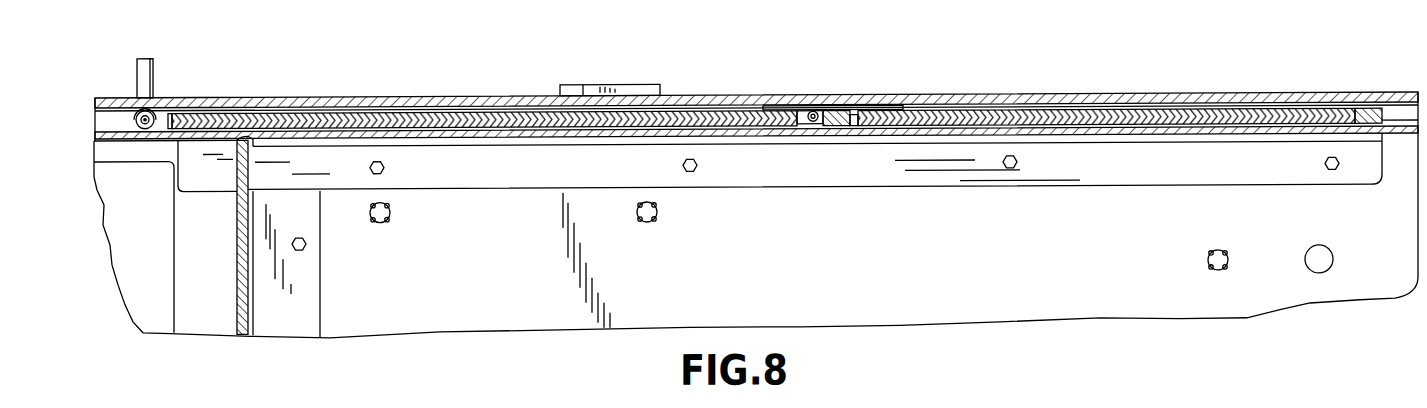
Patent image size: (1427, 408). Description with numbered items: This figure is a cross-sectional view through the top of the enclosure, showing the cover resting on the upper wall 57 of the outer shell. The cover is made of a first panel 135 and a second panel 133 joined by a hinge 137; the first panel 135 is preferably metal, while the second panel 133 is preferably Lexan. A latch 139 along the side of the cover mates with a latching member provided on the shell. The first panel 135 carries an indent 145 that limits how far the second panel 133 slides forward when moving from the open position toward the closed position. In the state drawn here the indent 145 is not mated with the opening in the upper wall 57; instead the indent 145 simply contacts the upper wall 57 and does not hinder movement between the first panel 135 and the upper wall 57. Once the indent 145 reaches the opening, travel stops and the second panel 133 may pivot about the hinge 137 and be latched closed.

The upper wall 57 is at (747, 136).
The second panel 133 is at (400, 126).
The first panel 135 is at (1111, 120).
The hinge 137 is at (813, 114).
The latch 139 is at (147, 78).
The indent 145 is at (866, 116).